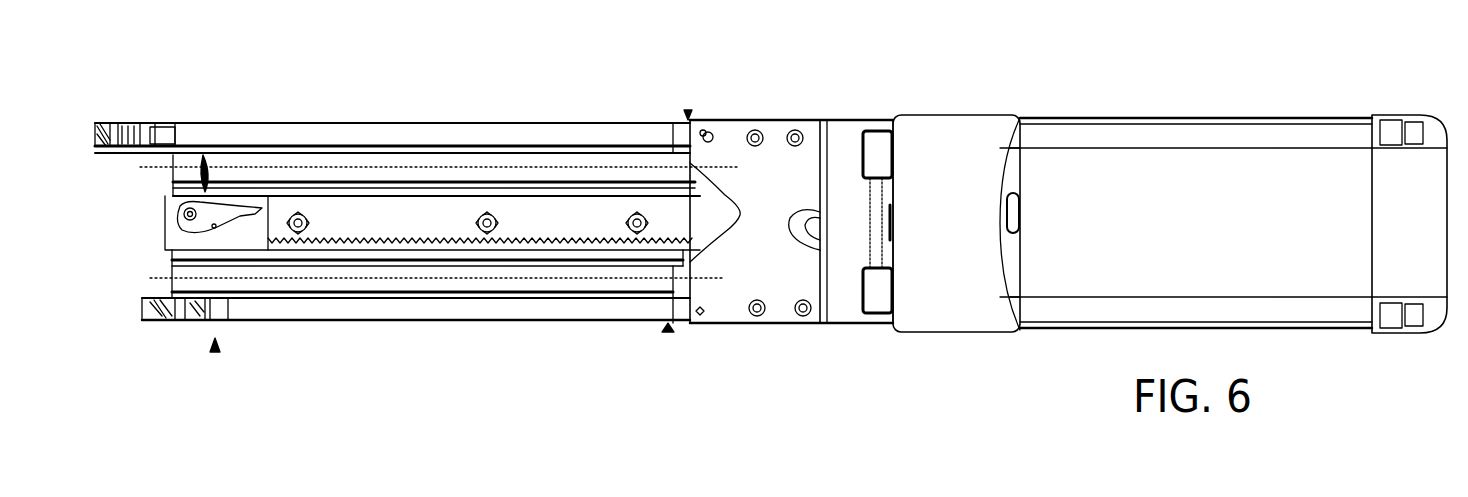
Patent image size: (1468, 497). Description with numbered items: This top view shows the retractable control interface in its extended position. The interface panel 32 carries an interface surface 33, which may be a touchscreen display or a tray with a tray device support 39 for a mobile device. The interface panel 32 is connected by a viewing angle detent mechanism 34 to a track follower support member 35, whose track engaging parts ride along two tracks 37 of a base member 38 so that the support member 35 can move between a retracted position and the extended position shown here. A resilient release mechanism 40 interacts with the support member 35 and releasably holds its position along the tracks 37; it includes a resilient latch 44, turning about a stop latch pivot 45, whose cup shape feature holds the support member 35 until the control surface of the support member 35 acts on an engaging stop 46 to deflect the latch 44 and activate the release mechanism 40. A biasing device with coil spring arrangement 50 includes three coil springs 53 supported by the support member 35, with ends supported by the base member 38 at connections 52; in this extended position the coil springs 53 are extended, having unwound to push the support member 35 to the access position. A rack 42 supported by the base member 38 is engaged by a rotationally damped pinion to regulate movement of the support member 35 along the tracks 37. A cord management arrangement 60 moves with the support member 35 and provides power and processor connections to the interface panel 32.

The interface panel 32 is at (1315, 108).
The interface surface 33 is at (1230, 178).
The viewing angle detent mechanism 34 is at (843, 130).
The track follower support member 35 is at (770, 178).
The tracks 37 is at (468, 285).
The base member 38 is at (475, 122).
The tray device support 39 is at (993, 130).
The release mechanism 40 is at (210, 192).
The rack 42 is at (345, 240).
The resilient latch 44 is at (214, 227).
The stop latch pivot 45 is at (186, 214).
The engaging stop 46 is at (262, 216).
The biasing device with coil spring arrangement 50 is at (690, 112).
The coil spring end connection 52 is at (208, 317).
The coil springs 53 is at (676, 152).
The cord management arrangement 60 is at (152, 130).